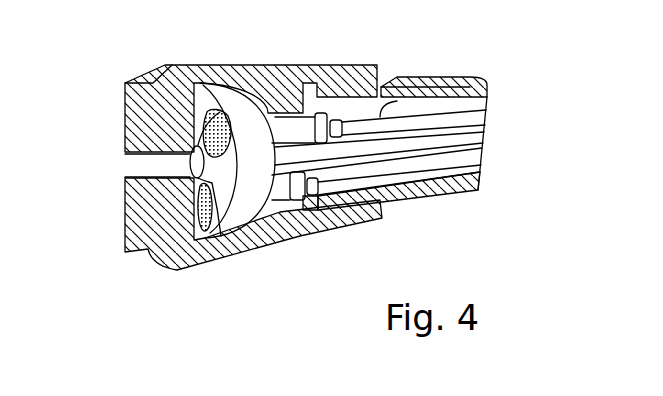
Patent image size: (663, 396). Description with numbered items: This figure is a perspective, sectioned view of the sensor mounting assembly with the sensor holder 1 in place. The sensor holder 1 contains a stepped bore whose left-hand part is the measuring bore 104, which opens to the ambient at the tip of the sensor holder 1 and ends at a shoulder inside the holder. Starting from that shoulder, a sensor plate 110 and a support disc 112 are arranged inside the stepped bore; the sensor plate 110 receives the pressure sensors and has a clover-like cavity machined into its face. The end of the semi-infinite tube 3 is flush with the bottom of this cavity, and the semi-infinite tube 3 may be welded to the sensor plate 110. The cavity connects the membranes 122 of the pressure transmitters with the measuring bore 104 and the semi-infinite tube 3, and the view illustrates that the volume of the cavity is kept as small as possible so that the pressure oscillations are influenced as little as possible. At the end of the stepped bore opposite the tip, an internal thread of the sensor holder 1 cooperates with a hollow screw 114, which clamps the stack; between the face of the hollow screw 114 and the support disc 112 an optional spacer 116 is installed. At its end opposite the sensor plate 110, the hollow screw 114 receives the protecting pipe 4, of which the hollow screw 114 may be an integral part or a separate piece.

The sensor holder 1 is at (177, 253).
The semi-infinite tube 3 is at (227, 237).
The protecting pipe 4 is at (473, 88).
The measuring bore 104 is at (137, 178).
The sensor plate 110 is at (230, 93).
The support disc 112 is at (277, 206).
The hollow screw 114 is at (392, 190).
The spacer 116 is at (306, 208).
The membranes 122 is at (202, 83).